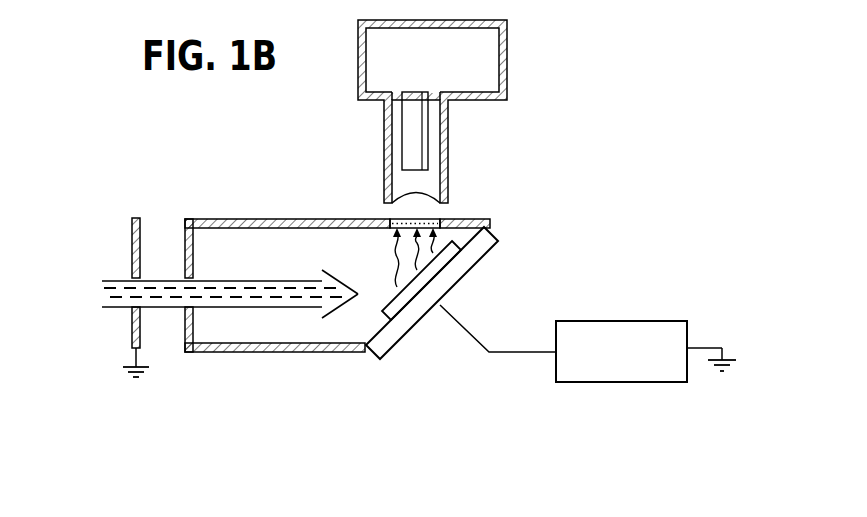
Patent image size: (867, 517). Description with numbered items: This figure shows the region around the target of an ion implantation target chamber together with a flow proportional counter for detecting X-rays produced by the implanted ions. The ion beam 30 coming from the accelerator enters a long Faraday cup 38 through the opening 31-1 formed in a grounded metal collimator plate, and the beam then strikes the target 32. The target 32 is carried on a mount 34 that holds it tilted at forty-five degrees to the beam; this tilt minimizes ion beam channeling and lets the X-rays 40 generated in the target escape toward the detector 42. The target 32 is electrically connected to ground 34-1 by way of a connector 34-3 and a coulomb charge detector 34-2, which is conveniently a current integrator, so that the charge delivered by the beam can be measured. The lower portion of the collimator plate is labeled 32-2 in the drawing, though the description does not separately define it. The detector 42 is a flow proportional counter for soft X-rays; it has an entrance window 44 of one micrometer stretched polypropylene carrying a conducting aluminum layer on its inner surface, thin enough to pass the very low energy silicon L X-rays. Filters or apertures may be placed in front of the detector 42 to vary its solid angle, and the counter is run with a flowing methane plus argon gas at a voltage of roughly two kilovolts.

The ion beam 30 is at (124, 288).
The opening 31-1 is at (138, 276).
The target 32 is at (445, 264).
The grounded aperture plate section 32-2 is at (132, 327).
The mount 34 is at (491, 240).
The ground 34-1 is at (722, 349).
The coulomb charge detector 34-2 is at (633, 379).
The connector 34-3 is at (503, 354).
The Faraday cup 38 is at (246, 203).
The X-rays 40 is at (396, 258).
The detector 42 is at (526, 24).
The entrance window 44 is at (395, 192).